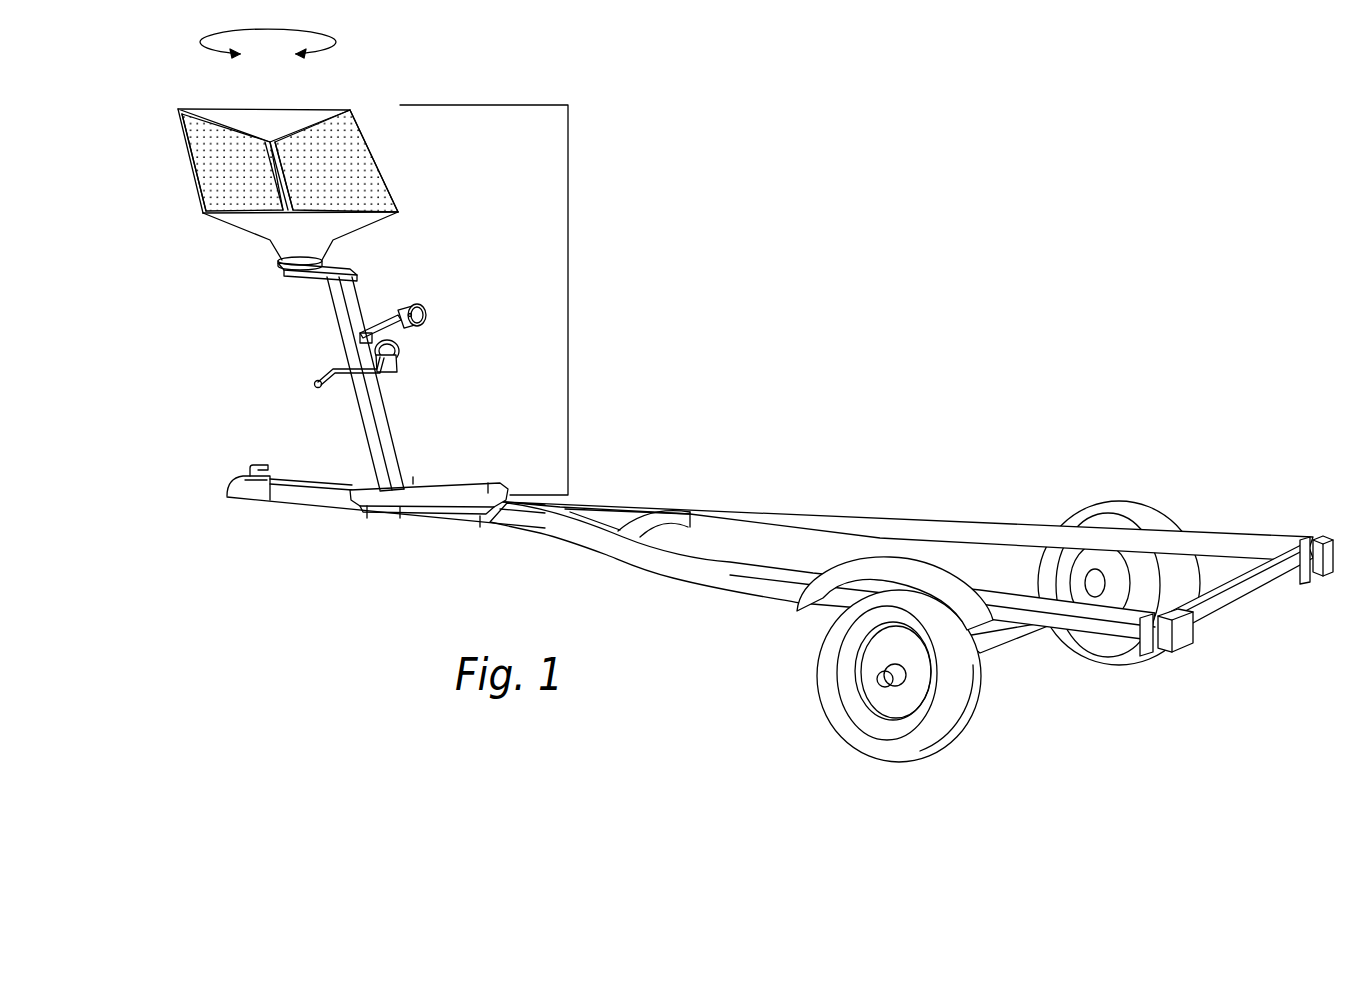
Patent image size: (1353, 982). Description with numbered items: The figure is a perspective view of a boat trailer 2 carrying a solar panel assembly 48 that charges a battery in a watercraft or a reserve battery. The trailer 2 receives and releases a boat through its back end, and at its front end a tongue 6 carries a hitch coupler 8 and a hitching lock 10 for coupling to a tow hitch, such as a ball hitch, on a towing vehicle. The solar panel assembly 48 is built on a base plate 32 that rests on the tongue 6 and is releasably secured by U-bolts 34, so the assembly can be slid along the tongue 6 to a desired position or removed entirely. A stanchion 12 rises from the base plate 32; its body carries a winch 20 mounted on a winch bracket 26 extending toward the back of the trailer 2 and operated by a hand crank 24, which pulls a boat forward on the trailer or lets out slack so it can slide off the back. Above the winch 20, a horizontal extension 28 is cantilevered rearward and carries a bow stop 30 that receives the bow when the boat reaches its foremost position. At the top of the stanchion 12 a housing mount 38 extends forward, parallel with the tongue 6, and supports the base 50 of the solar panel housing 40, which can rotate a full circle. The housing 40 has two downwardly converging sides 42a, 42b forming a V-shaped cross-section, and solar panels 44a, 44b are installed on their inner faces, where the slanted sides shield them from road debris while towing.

The boat trailer 2 is at (668, 493).
The tongue 6 is at (317, 503).
The hitch coupler 8 is at (225, 486).
The hitching lock 10 is at (258, 463).
The stanchion 12 is at (390, 441).
The winch 20 is at (400, 350).
The hand crank 24 is at (317, 378).
The winch bracket 26 is at (393, 368).
The horizontal extension 28 is at (372, 322).
The bow stop 30 is at (428, 315).
The base plate 32 is at (474, 483).
The U-bolt 34 is at (401, 515).
The housing mount 38 is at (302, 282).
The solar panel housing 40 is at (402, 178).
The right side 42a is at (230, 226).
The left side 42b is at (380, 225).
The right solar panel 44a is at (213, 172).
The left solar panel 44b is at (303, 135).
The solar panel assembly 48 is at (570, 302).
The base 50 is at (280, 264).